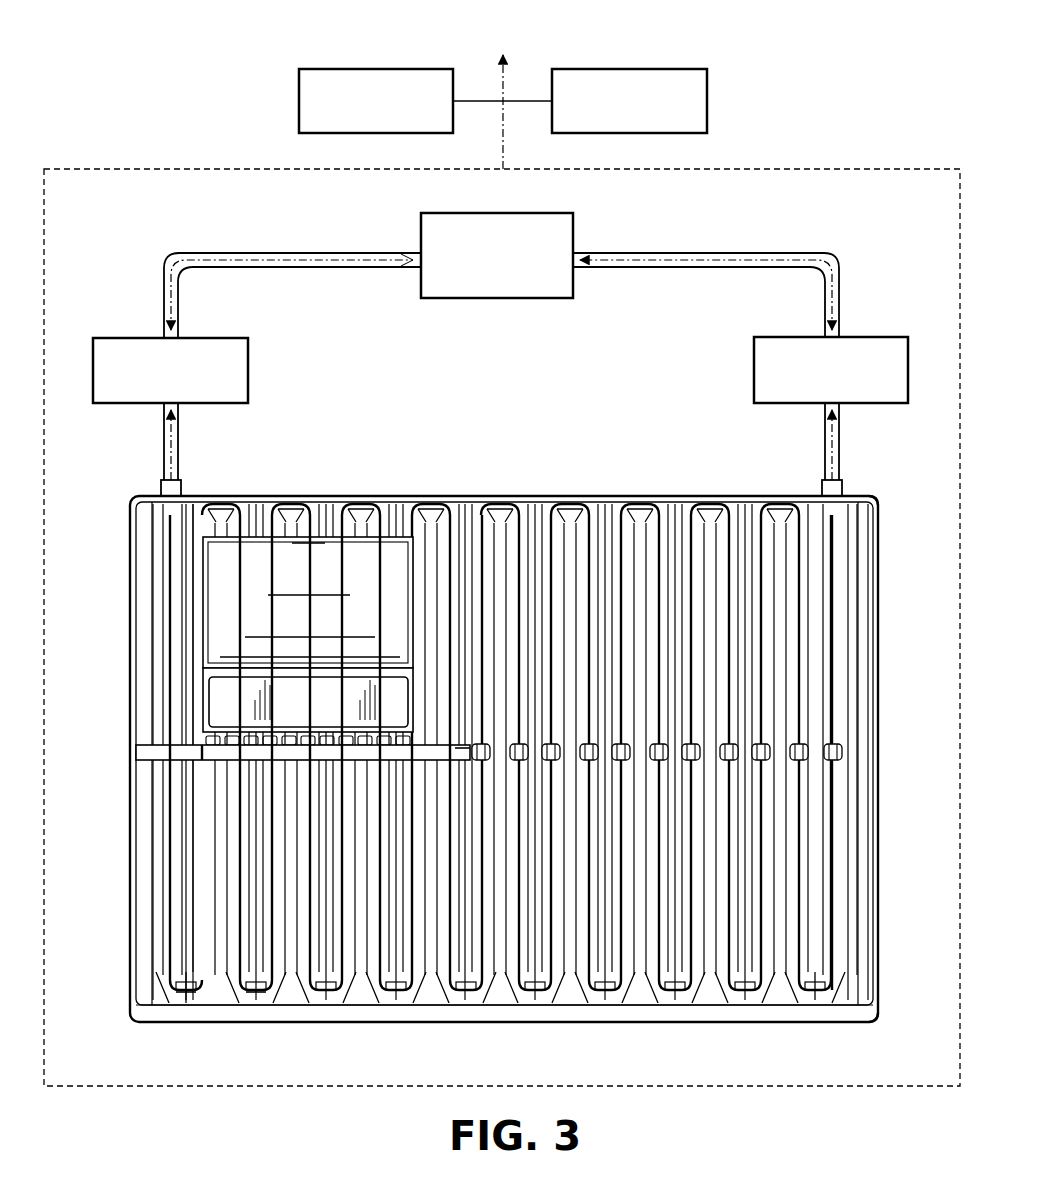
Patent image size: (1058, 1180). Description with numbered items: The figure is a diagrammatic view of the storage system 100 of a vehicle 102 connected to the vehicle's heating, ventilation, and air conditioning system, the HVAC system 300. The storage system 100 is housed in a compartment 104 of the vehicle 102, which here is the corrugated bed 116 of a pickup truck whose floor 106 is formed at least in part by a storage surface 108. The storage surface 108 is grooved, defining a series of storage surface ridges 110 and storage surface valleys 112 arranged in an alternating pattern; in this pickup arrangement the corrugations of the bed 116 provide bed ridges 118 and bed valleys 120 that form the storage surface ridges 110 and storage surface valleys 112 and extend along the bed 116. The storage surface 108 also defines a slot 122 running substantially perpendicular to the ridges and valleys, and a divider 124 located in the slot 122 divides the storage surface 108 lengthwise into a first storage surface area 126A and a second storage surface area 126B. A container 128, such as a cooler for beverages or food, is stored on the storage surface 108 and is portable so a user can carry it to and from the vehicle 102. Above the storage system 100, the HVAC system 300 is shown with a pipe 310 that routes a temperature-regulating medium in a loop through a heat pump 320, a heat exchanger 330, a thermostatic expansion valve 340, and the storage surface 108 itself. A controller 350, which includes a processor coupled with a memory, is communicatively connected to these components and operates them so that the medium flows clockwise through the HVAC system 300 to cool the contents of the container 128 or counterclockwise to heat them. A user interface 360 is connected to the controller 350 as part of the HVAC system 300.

The storage system 100 is at (90, 531).
The vehicle 102 is at (128, 618).
The compartment 104 is at (128, 683).
The floor 106 is at (143, 785).
The storage surface 108 is at (143, 872).
The storage surface ridge 110 is at (205, 985).
The storage surface valley 112 is at (255, 992).
The bed 116 is at (885, 585).
The bed ridge 118 is at (843, 705).
The bed valley 120 is at (822, 773).
The slot 122 is at (765, 762).
The divider 124 is at (432, 760).
The first storage surface area 126A is at (882, 522).
The second storage surface area 126B is at (882, 935).
The container 128 is at (360, 530).
The HVAC system 300 is at (850, 245).
The pipe 310 is at (302, 250).
The heat pump 320 is at (170, 370).
The heat exchanger 330 is at (497, 255).
The thermostatic expansion valve 340 is at (831, 370).
The controller 350 is at (376, 101).
The user interface 360 is at (629, 101).